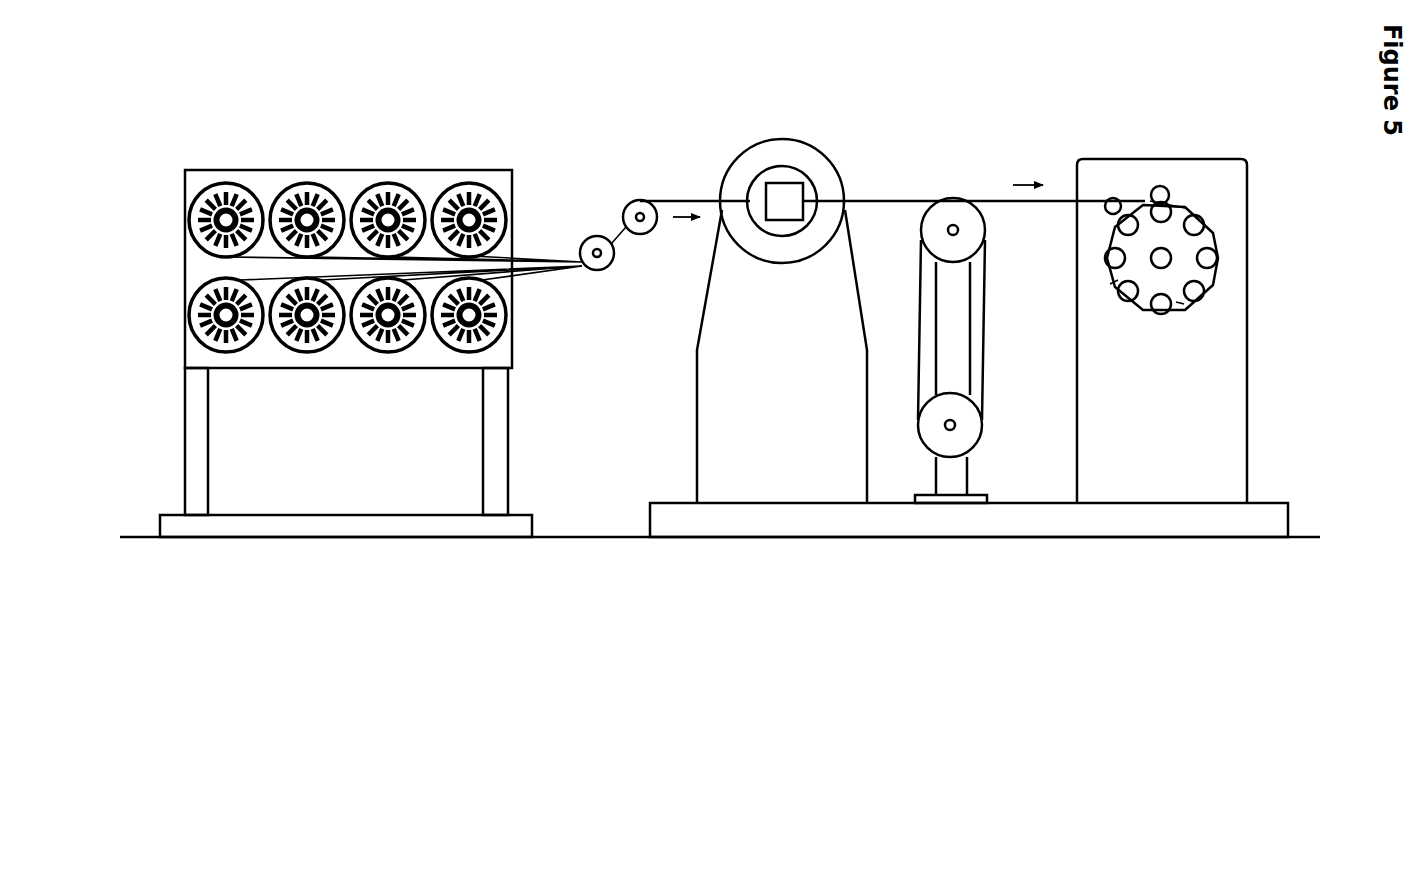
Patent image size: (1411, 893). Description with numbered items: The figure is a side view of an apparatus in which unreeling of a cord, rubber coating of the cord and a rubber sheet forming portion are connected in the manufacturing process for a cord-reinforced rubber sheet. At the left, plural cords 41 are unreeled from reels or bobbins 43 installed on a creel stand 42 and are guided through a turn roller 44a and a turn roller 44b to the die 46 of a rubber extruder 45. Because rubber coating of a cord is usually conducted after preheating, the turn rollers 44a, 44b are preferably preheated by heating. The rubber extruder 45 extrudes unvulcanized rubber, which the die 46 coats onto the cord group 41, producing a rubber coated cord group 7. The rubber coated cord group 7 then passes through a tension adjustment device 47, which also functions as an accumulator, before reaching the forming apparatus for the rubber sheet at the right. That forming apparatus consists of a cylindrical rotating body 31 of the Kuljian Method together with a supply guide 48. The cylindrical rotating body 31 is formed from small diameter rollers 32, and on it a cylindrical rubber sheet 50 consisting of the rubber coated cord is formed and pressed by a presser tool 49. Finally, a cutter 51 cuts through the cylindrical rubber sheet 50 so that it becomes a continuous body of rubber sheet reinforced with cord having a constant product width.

The creel stand 42 is at (434, 170).
The reels or bobbins 43 is at (478, 192).
The turn roller 44a is at (598, 270).
The turn roller 44b is at (650, 234).
The cords 41 is at (687, 201).
The die 46 is at (786, 178).
The rubber coated cord group 7 is at (890, 201).
The rubber extruder 45 is at (716, 420).
The tension adjustment device 47 is at (955, 340).
The supply guide 48 is at (1110, 199).
The presser tool 49 is at (1157, 187).
The cutter 51 is at (1186, 205).
The cylindrical rotating body 31 is at (1220, 279).
The cylindrical rubber sheet 50 is at (1115, 282).
The small diameter roller 32 is at (1180, 302).